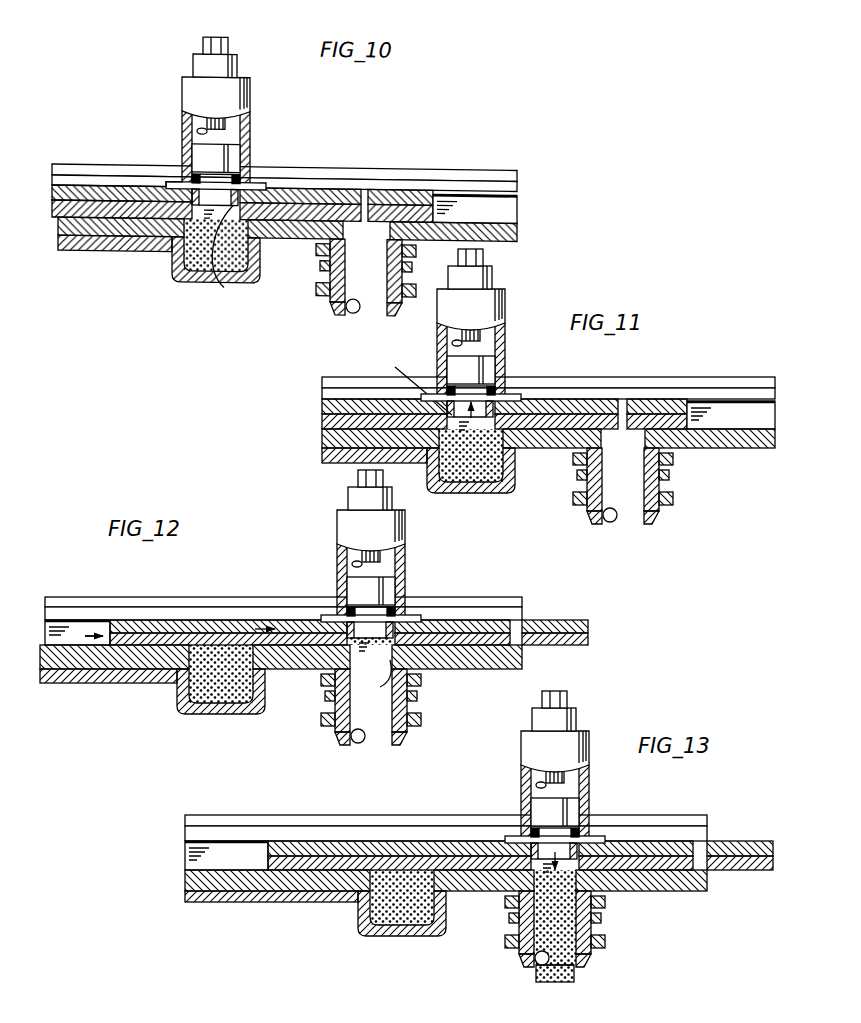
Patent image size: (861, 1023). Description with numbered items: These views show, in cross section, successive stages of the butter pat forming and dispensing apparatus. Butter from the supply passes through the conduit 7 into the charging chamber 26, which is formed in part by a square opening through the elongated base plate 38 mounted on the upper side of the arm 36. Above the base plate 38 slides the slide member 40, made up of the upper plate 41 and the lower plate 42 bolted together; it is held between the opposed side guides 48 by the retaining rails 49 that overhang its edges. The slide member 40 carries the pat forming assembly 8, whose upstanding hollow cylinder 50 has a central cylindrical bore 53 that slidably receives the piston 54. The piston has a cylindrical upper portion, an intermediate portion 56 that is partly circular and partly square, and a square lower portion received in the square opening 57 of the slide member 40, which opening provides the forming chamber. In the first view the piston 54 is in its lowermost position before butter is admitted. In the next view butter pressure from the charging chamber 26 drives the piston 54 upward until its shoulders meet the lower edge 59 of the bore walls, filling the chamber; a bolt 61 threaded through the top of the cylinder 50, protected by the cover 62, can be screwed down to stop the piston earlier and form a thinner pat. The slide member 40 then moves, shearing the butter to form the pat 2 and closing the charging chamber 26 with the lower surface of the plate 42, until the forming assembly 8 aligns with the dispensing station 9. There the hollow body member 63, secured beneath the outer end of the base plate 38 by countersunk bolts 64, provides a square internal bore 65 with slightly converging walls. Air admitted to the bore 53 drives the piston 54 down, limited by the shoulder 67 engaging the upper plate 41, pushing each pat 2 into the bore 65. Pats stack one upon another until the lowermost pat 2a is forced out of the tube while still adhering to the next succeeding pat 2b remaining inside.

In FIG. 12, the pat of butter 2 is at (372, 653).
In FIG. 13, the pat of butter 2 is at (567, 920).
In FIG. 13, the lowermost pat 2a is at (563, 982).
In FIG. 13, the next succeeding pat 2b is at (543, 965).
In FIG. 10, the conduit 7 is at (196, 272).
In FIG. 11, the conduit 7 is at (472, 476).
In FIG. 12, the conduit 7 is at (196, 697).
In FIG. 13, the conduit 7 is at (379, 919).
In FIG. 10, the pat forming assembly 8 is at (221, 124).
In FIG. 11, the pat forming assembly 8 is at (475, 339).
In FIG. 12, the pat forming assembly 8 is at (365, 560).
In FIG. 13, the pat forming assembly 8 is at (551, 775).
In FIG. 10, the dispensing station 9 is at (348, 293).
In FIG. 11, the dispensing station 9 is at (619, 501).
In FIG. 12, the dispensing station 9 is at (366, 722).
In FIG. 13, the dispensing station 9 is at (556, 938).
In FIG. 10, the charging chamber 26 is at (190, 261).
In FIG. 11, the charging chamber 26 is at (478, 482).
In FIG. 12, the charging chamber 26 is at (190, 698).
In FIG. 13, the charging chamber 26 is at (368, 915).
In FIG. 10, the arm 36 is at (83, 250).
In FIG. 11, the arm 36 is at (326, 458).
In FIG. 12, the arm 36 is at (78, 683).
In FIG. 13, the arm 36 is at (242, 903).
In FIG. 10, the base plate 38 is at (507, 230).
In FIG. 11, the base plate 38 is at (325, 445).
In FIG. 12, the base plate 38 is at (53, 653).
In FIG. 13, the base plate 38 is at (673, 893).
In FIG. 10, the slide member 40 is at (313, 185).
In FIG. 11, the slide member 40 is at (477, 392).
In FIG. 12, the slide member 40 is at (319, 625).
In FIG. 13, the slide member 40 is at (718, 840).
In FIG. 11, the upper plate 41 is at (563, 400).
In FIG. 12, the upper plate 41 is at (540, 623).
In FIG. 11, the lower plate 42 is at (322, 423).
In FIG. 10, the side guides 48 is at (510, 195).
In FIG. 11, the side guides 48 is at (763, 420).
In FIG. 12, the side guides 48 is at (52, 627).
In FIG. 13, the side guides 48 is at (202, 850).
In FIG. 10, the retaining rails 49 is at (395, 168).
In FIG. 11, the retaining rails 49 is at (685, 384).
In FIG. 12, the retaining rails 49 is at (81, 597).
In FIG. 13, the retaining rails 49 is at (235, 805).
In FIG. 10, the cylinder 50 is at (193, 87).
In FIG. 11, the cylinder 50 is at (500, 308).
In FIG. 12, the cylinder 50 is at (353, 522).
In FIG. 13, the cylinder 50 is at (532, 742).
In FIG. 10, the cylindrical bore 53 is at (203, 127).
In FIG. 11, the cylindrical bore 53 is at (490, 337).
In FIG. 12, the cylindrical bore 53 is at (392, 557).
In FIG. 13, the cylindrical bore 53 is at (572, 788).
In FIG. 10, the piston 54 is at (225, 154).
In FIG. 11, the piston 54 is at (453, 357).
In FIG. 12, the piston 54 is at (353, 575).
In FIG. 13, the piston 54 is at (563, 810).
In FIG. 10, the intermediate portion 56 is at (183, 178).
In FIG. 10, the forming chamber opening 57 is at (227, 254).
In FIG. 11, the forming chamber opening 57 is at (412, 386).
In FIG. 12, the forming chamber opening 57 is at (375, 679).
In FIG. 10, the lower edge 59 is at (458, 177).
In FIG. 11, the lower edge 59 is at (732, 396).
In FIG. 12, the lower edge 59 is at (107, 613).
In FIG. 13, the lower edge 59 is at (293, 833).
In FIG. 10, the bolt 61 is at (225, 115).
In FIG. 11, the bolt 61 is at (460, 330).
In FIG. 12, the bolt 61 is at (362, 550).
In FIG. 13, the bolt 61 is at (542, 773).
In FIG. 10, the cover 62 is at (202, 45).
In FIG. 11, the cover 62 is at (483, 258).
In FIG. 12, the cover 62 is at (360, 475).
In FIG. 13, the cover 62 is at (562, 695).
In FIG. 10, the hollow body member 63 is at (330, 267).
In FIG. 11, the hollow body member 63 is at (590, 484).
In FIG. 12, the hollow body member 63 is at (336, 700).
In FIG. 13, the hollow body member 63 is at (515, 920).
In FIG. 10, the countersunk bolts 64 is at (317, 237).
In FIG. 11, the countersunk bolts 64 is at (672, 448).
In FIG. 12, the countersunk bolts 64 is at (420, 673).
In FIG. 13, the countersunk bolts 64 is at (610, 888).
In FIG. 10, the internal bore 65 is at (352, 313).
In FIG. 11, the internal bore 65 is at (637, 522).
In FIG. 12, the internal bore 65 is at (378, 738).
In FIG. 13, the internal bore 65 is at (587, 963).
In FIG. 10, the shoulder 67 is at (250, 169).
In FIG. 11, the shoulder 67 is at (497, 378).
In FIG. 12, the shoulder 67 is at (397, 593).
In FIG. 13, the shoulder 67 is at (538, 823).